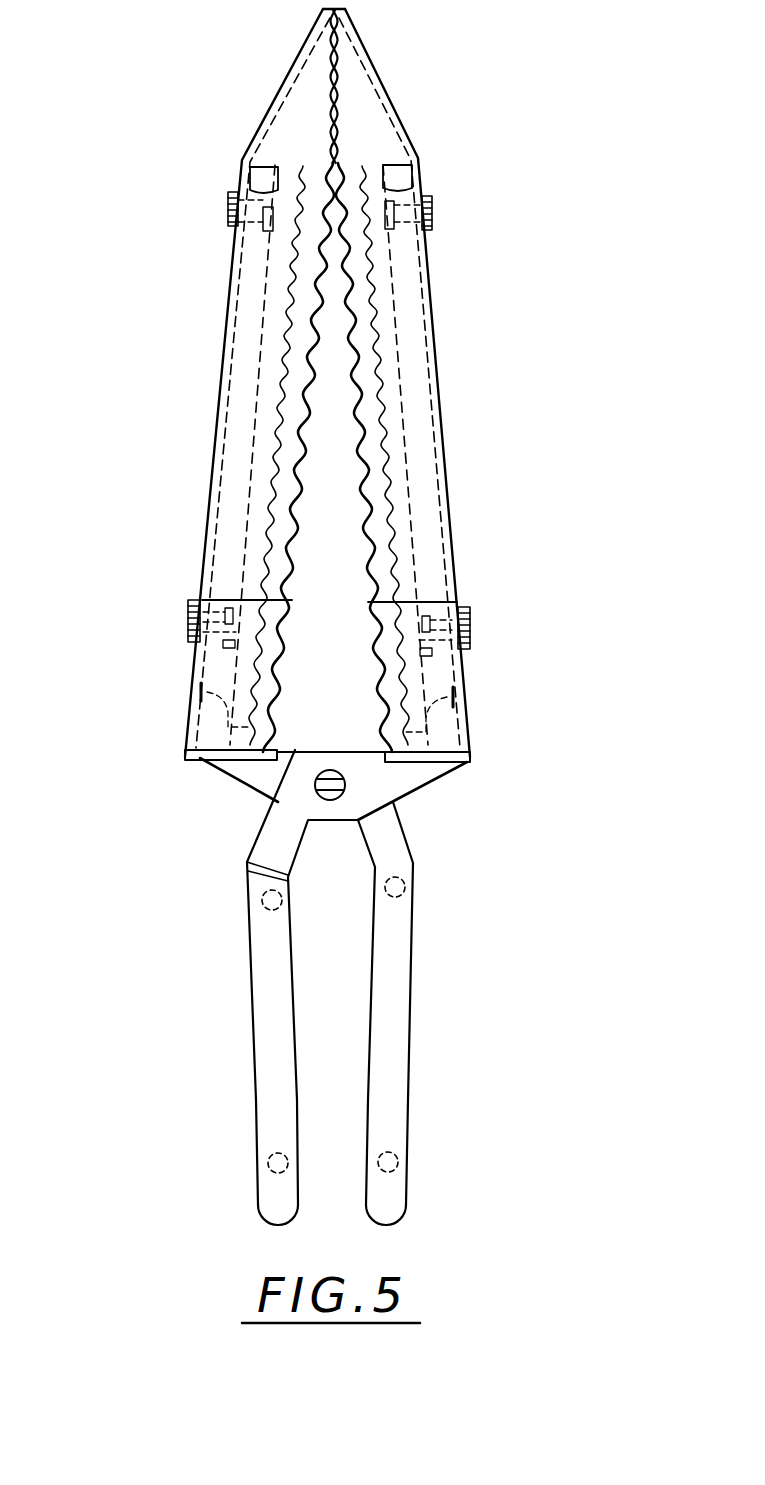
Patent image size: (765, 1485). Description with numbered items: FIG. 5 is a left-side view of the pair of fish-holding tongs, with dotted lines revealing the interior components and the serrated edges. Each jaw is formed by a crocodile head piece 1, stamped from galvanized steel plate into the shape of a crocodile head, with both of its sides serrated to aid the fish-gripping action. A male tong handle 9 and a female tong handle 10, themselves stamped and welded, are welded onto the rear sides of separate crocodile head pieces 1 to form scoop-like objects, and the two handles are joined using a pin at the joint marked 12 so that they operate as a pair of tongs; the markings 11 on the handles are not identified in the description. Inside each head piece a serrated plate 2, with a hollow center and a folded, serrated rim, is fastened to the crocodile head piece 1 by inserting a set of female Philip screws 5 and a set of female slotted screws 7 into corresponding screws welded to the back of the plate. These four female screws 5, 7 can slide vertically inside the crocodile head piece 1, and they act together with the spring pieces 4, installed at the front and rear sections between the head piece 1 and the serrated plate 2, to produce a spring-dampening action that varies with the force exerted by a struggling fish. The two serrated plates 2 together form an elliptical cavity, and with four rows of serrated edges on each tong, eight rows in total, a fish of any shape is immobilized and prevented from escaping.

The crocodile head piece 1 is at (305, 97).
The serrated plate 2 is at (263, 440).
The spring piece 4 is at (268, 178).
The female Philip screws 5 is at (188, 613).
The female slotted screws 7 is at (228, 222).
The male tong handle 9 is at (260, 773).
The female tong handle 10 is at (280, 832).
The holes 11 is at (270, 900).
The pivot screw 12 is at (342, 782).